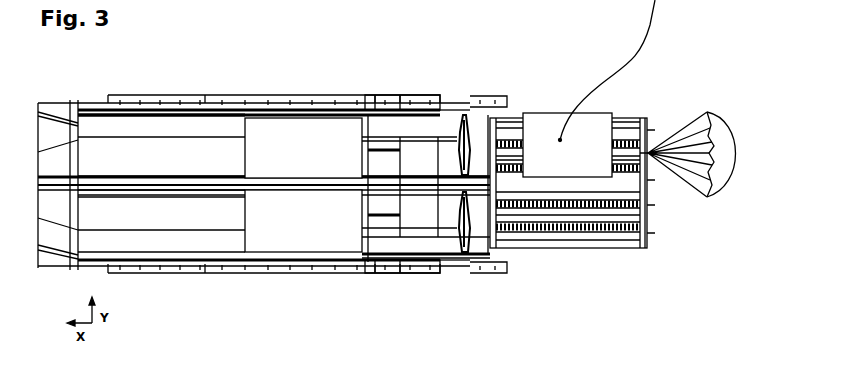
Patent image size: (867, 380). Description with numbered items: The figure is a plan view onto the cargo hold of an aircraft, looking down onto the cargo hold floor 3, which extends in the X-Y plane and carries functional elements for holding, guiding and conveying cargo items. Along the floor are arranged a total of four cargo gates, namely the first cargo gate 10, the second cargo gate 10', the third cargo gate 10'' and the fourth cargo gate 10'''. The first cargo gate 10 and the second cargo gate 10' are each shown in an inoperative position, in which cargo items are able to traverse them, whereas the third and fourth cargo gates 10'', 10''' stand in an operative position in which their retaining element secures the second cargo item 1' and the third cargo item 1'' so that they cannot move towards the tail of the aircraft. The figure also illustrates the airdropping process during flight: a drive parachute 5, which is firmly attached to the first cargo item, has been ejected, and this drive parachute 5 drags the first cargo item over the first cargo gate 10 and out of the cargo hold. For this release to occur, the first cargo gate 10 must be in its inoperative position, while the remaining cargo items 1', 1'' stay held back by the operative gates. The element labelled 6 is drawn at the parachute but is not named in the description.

The third cargo item 1'' is at (303, 97).
The second cargo item 1' is at (303, 278).
The cargo hold floor 3 is at (180, 221).
The drive parachute 5 is at (548, 228).
The parachute 6 is at (719, 142).
The first cargo gate 10 is at (456, 98).
The second cargo gate 10' is at (441, 278).
The third cargo gate 10'' is at (402, 66).
The fourth cargo gate 10''' is at (380, 309).